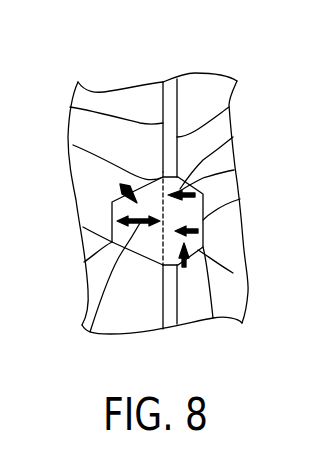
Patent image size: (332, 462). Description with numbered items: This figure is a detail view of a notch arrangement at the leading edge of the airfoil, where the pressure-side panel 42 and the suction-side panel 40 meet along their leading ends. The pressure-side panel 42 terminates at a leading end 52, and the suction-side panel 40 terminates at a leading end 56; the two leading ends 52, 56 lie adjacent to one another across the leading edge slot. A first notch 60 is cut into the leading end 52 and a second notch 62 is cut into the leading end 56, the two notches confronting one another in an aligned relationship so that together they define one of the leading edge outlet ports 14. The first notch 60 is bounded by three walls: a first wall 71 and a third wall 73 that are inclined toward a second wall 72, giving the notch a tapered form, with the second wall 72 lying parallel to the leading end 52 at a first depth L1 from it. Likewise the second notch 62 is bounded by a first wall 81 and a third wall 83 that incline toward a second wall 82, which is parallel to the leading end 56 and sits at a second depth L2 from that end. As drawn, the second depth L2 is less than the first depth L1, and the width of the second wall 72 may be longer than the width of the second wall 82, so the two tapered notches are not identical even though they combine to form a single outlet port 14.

The leading edge outlet port 14 is at (213, 320).
The suction-side panel 40 is at (208, 82).
The pressure-side panel 42 is at (132, 98).
The leading end 52 is at (70, 107).
The leading end 56 is at (229, 107).
The first notch 60 is at (122, 186).
The second notch 62 is at (198, 231).
The first wall 71 is at (73, 145).
The second wall 72 is at (83, 227).
The third wall 73 is at (84, 262).
The first wall 81 is at (233, 137).
The second wall 82 is at (240, 199).
The third wall 83 is at (233, 273).
The first depth L1 is at (86, 333).
The second depth L2 is at (234, 170).